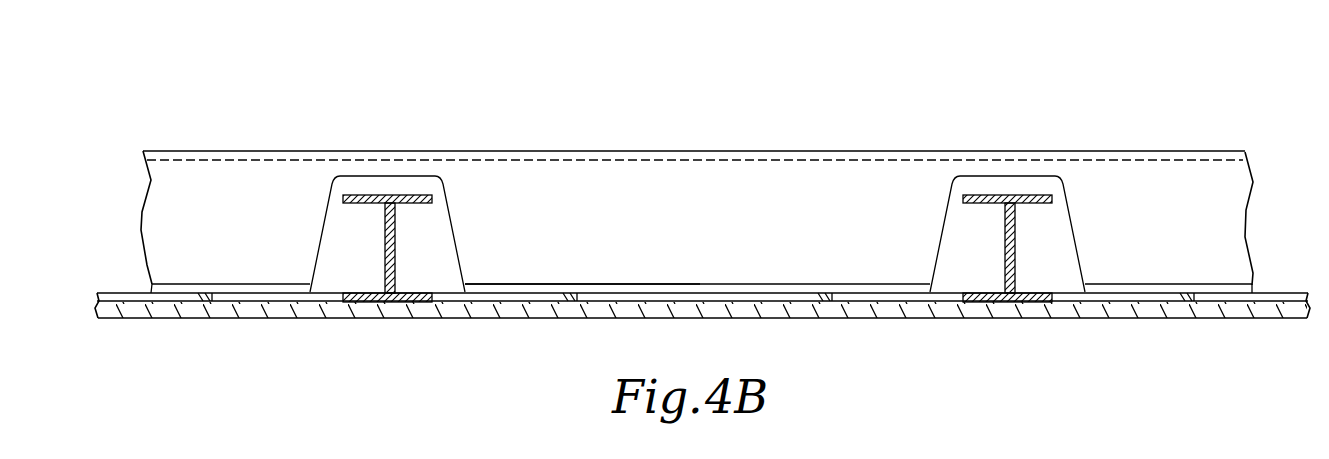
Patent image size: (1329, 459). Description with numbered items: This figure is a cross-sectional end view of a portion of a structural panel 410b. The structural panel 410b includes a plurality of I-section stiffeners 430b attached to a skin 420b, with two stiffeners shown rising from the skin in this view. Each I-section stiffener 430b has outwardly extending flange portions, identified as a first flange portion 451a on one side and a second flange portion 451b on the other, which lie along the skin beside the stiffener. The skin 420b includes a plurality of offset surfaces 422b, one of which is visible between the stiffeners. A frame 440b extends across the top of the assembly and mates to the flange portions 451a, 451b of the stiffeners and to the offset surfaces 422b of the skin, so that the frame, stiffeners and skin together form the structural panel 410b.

The structural panel 410b is at (1078, 99).
The frame 440b is at (1195, 150).
The I-section stiffener 430b is at (395, 242).
The first flange portion 451a is at (270, 292).
The second flange portion 451b is at (512, 288).
The offset surface 422b is at (705, 292).
The skin 420b is at (1065, 319).